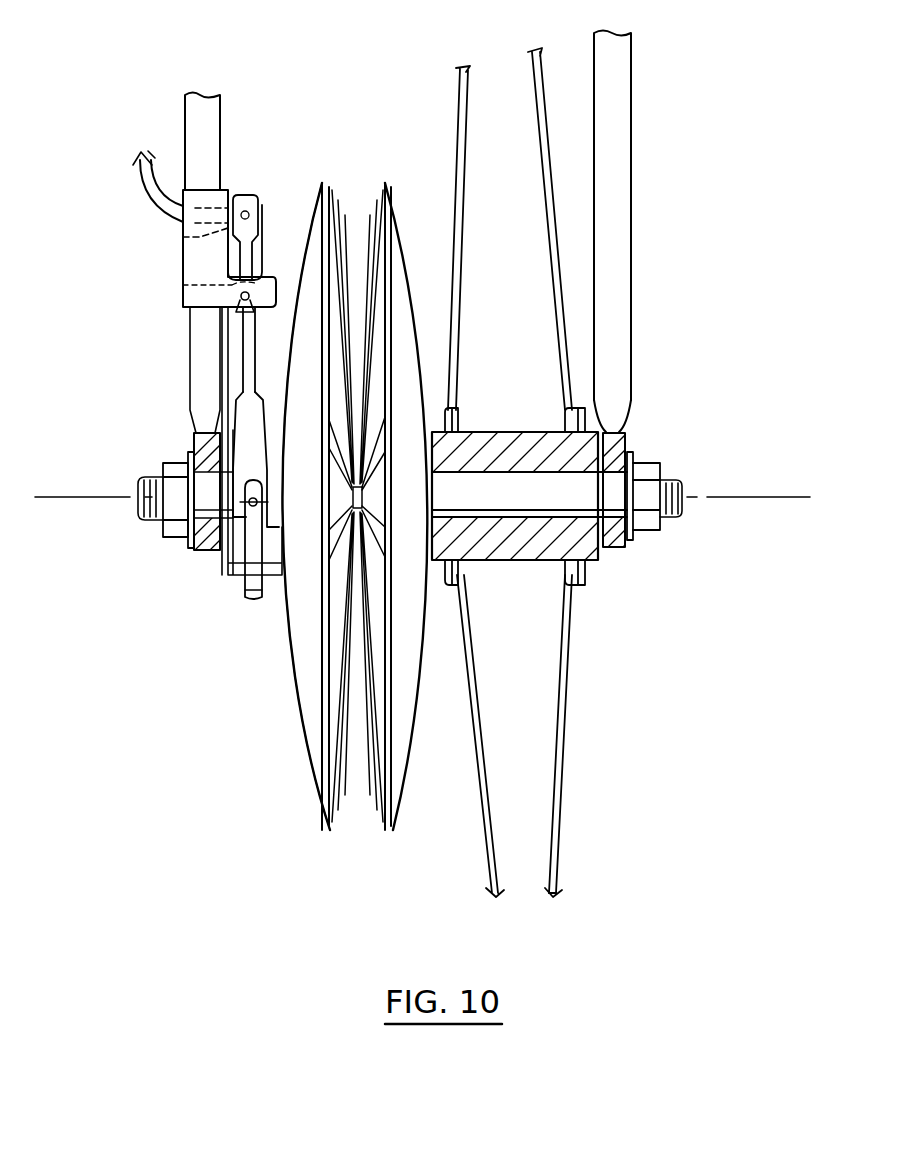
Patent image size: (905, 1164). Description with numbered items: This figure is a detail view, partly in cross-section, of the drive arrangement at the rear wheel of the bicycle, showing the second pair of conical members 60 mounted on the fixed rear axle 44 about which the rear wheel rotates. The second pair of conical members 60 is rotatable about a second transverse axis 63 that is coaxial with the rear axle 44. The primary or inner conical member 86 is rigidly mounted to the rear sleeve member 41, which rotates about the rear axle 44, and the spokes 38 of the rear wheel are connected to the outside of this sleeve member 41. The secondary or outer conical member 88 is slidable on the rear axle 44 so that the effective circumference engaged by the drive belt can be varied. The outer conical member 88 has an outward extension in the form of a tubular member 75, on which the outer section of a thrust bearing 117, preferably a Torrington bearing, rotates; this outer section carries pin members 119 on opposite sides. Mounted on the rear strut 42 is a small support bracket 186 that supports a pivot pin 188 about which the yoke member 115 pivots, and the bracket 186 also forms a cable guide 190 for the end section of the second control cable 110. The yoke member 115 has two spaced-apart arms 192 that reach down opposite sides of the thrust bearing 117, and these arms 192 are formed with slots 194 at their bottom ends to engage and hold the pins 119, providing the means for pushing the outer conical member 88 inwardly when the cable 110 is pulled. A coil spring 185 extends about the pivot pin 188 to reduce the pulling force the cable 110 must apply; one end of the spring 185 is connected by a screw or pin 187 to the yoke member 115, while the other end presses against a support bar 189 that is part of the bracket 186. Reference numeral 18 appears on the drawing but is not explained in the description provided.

The rear strut 42 is at (222, 126).
The second control cable 110 is at (133, 174).
The yoke member 115 is at (260, 205).
The cable guide 190 is at (200, 240).
The support bracket 186 is at (185, 252).
The coil spring 185 is at (258, 283).
The support bar 189 is at (205, 298).
The pivot pin 188 is at (240, 318).
The screw or pin 187 is at (252, 328).
The arms 192 is at (250, 415).
The slots 194 is at (258, 502).
The pin members 119 is at (258, 498).
The tubular member 75 is at (230, 578).
The thrust bearing 117 is at (255, 595).
The second pair of conical members 60 is at (329, 213).
The primary conical member 86 is at (400, 215).
The secondary conical member 88 is at (298, 668).
The second transverse axis 63 is at (756, 497).
The rear sleeve member 41 is at (523, 560).
The rear axle 44 is at (574, 503).
The fork leg 18 is at (543, 695).
The spokes 38 is at (563, 767).